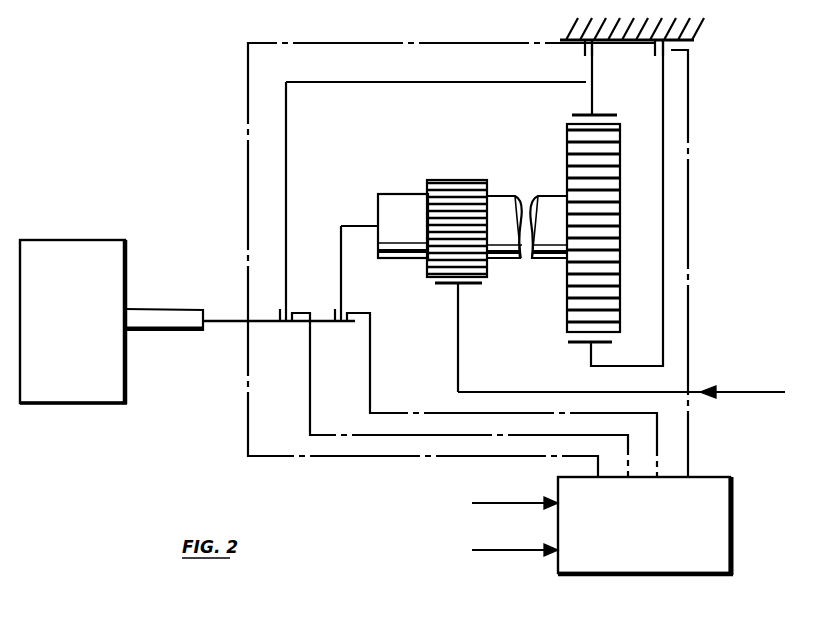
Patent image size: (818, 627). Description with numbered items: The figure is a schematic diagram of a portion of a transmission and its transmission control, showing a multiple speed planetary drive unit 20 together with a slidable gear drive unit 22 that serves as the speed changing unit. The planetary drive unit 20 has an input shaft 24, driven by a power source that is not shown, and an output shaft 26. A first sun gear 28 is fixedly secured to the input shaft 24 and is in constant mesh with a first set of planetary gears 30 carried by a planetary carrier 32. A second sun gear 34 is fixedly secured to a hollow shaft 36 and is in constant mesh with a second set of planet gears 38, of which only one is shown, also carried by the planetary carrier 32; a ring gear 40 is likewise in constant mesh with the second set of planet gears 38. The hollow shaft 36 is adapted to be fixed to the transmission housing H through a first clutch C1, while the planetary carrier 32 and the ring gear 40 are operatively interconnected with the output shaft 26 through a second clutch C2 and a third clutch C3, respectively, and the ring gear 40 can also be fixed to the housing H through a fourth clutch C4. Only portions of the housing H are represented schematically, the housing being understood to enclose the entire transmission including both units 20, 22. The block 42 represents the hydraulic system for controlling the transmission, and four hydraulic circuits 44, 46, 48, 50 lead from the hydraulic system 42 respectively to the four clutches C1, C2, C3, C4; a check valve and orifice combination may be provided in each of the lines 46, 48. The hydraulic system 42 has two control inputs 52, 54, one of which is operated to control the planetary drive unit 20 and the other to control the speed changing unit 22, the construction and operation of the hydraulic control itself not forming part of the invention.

The transmission housing H is at (700, 30).
The planetary drive unit 20 is at (700, 151).
The slidable gear drive unit 22 is at (112, 382).
The input shaft 24 is at (755, 393).
The output shaft 26 is at (170, 322).
The first sun gear 28 is at (465, 288).
The first set of planetary gears 30 is at (462, 178).
The planetary carrier 32 is at (357, 226).
The second sun gear 34 is at (576, 346).
The hollow shaft 36 is at (637, 366).
The second set of planet gears 38 is at (605, 155).
The ring gear 40 is at (603, 112).
The hydraulic system 42 is at (722, 517).
The hydraulic circuit 44 is at (690, 457).
The hydraulic circuit 46 is at (660, 434).
The hydraulic circuit 48 is at (630, 465).
The hydraulic circuit 50 is at (600, 465).
The control input 52 is at (535, 506).
The control input 54 is at (490, 547).
The first clutch C1 is at (669, 50).
The second clutch C2 is at (356, 311).
The third clutch C3 is at (300, 311).
The fourth clutch C4 is at (598, 48).